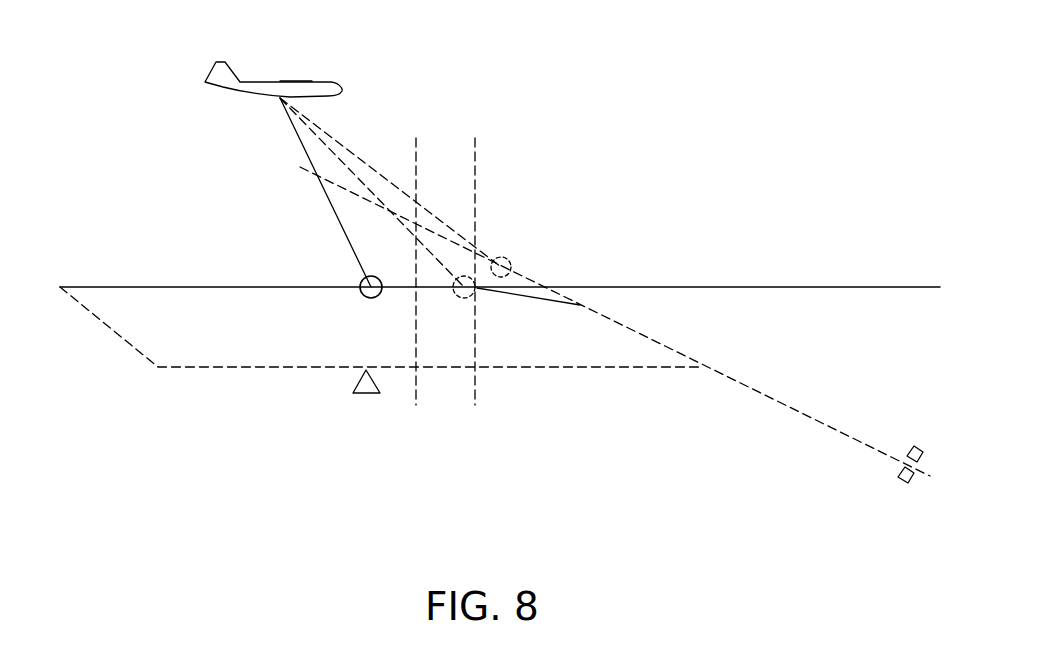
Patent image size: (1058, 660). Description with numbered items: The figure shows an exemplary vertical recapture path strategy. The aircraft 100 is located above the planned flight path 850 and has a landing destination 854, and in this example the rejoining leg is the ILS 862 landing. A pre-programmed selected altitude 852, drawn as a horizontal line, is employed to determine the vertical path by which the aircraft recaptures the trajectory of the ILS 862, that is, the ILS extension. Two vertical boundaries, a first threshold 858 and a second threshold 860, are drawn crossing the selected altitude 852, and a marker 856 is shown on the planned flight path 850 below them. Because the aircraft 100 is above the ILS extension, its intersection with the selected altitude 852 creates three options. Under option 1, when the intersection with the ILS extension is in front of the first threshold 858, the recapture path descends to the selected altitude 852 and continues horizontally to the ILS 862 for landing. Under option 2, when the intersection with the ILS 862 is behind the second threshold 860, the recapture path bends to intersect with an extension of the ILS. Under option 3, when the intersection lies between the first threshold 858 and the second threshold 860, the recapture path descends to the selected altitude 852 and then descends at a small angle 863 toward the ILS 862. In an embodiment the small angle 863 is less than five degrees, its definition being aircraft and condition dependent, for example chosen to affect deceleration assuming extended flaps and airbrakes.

The aircraft 100 is at (273, 81).
The planned flight path 850 is at (108, 328).
The selected altitude 852 is at (898, 287).
The landing destination 854 is at (914, 446).
The altitude intercept point marker 856 is at (367, 396).
The first threshold 858 is at (415, 163).
The second threshold 860 is at (476, 147).
The ILS 862 is at (328, 183).
The small angle 863 is at (533, 332).
The option 1 is at (368, 298).
The option 2 is at (505, 257).
The option 3 is at (463, 298).